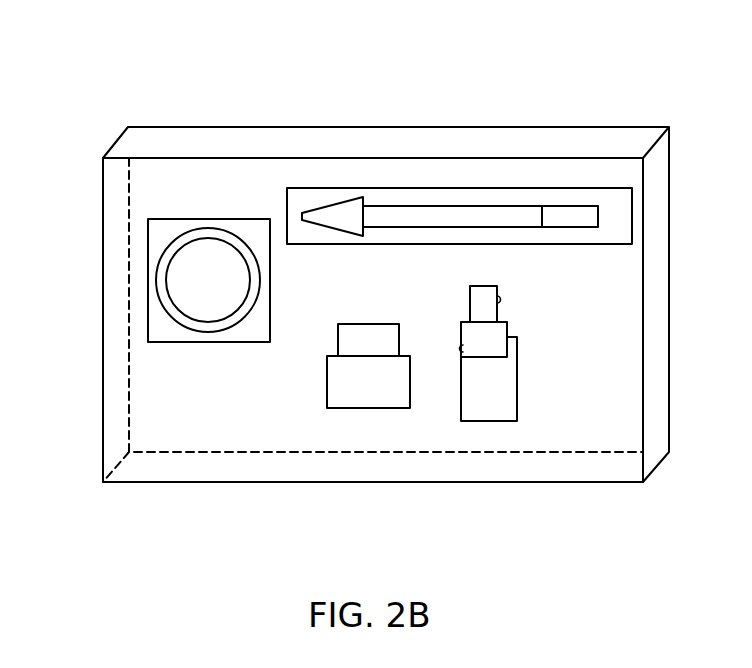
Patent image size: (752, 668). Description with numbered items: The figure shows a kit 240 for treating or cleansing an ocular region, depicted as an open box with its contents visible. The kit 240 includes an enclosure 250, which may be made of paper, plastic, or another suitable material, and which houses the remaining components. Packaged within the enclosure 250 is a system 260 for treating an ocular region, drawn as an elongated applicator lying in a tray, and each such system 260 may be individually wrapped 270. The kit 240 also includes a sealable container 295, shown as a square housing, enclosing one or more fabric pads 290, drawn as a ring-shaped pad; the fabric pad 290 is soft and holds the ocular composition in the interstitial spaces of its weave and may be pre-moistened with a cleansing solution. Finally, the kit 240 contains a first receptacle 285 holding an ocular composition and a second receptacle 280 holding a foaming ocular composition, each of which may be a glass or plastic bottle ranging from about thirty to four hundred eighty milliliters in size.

The kit 240 is at (417, 56).
The enclosure 250 is at (295, 422).
The system for treating an ocular region 260 is at (490, 206).
The individual wrap 270 is at (590, 188).
The second receptacle 280 is at (497, 393).
The first receptacle 285 is at (379, 394).
The fabric pad 290 is at (157, 275).
The sealable container 295 is at (148, 333).